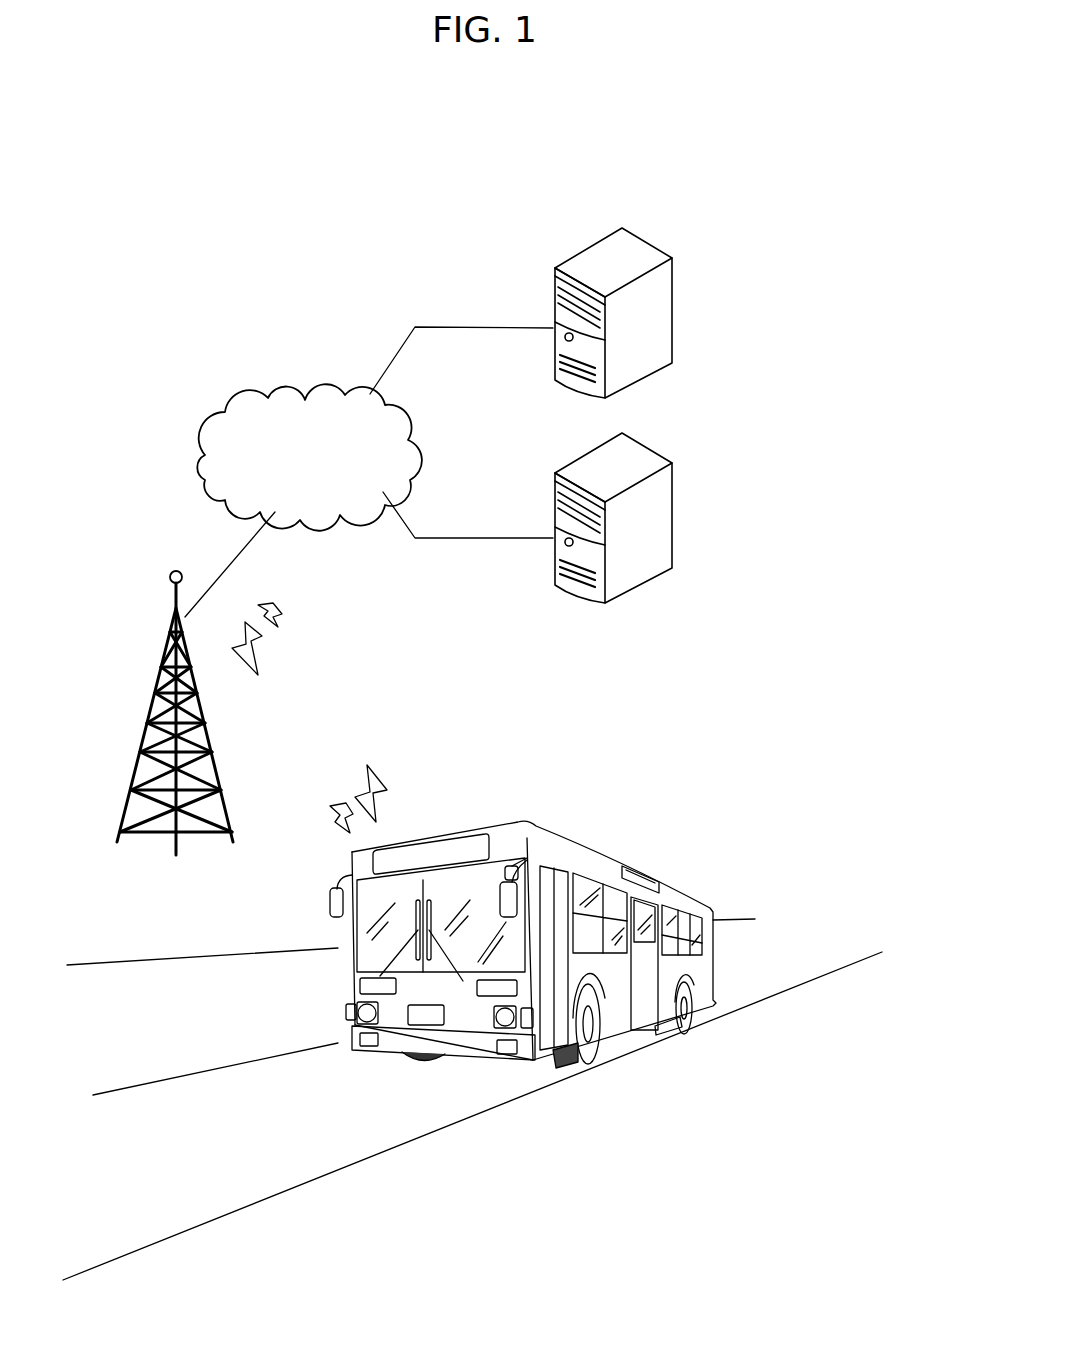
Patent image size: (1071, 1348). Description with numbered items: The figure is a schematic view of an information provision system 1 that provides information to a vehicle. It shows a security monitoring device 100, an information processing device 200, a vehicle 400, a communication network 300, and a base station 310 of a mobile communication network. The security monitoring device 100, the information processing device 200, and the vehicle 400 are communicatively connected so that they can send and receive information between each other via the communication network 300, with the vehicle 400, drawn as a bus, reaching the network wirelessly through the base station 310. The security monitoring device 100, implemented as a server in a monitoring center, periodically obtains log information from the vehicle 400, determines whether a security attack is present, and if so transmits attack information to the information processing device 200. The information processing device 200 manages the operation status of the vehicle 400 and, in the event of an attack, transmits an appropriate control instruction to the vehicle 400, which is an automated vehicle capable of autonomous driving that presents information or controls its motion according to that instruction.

The information provision system 1 is at (782, 166).
The security monitoring device 100 is at (666, 256).
The information processing device 200 is at (666, 461).
The communication network 300 is at (233, 410).
The base station 310 is at (152, 652).
The vehicle 400 is at (573, 849).